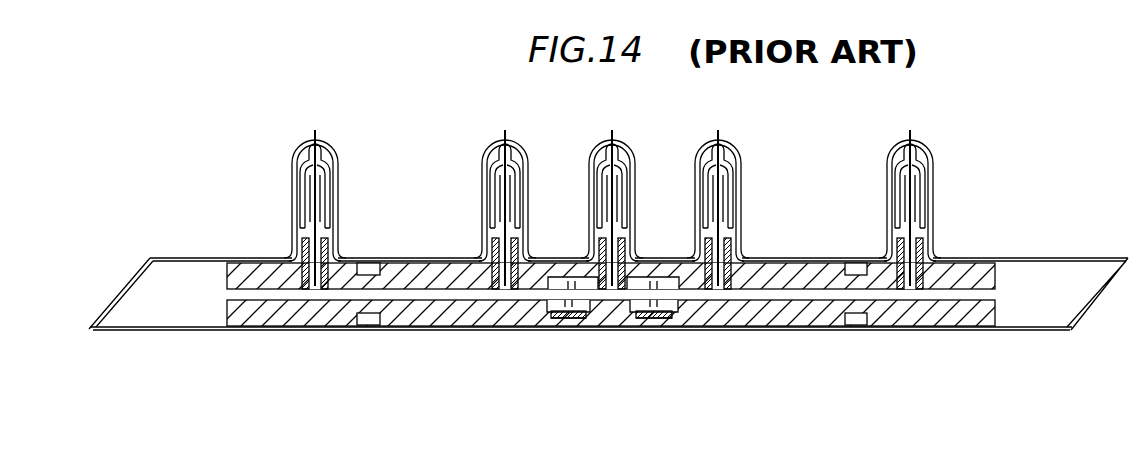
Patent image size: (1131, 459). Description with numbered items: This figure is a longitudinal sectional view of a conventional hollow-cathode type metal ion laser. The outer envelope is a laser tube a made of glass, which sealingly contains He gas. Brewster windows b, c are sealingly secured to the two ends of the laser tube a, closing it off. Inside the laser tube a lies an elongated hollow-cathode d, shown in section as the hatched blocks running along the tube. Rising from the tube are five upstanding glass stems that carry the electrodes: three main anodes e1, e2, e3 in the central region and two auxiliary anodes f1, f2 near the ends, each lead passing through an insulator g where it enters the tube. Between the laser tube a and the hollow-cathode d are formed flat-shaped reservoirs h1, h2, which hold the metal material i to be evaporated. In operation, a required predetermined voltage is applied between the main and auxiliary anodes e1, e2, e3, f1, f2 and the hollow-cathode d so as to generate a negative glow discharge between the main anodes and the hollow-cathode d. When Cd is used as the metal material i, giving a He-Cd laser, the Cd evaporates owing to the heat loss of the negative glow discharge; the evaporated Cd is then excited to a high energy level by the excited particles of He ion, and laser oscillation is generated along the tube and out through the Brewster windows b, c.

The laser tube a is at (197, 258).
The Brewster window b is at (127, 283).
The Brewster window c is at (1093, 310).
The hollow-cathode d is at (418, 262).
The main anode e1 is at (505, 190).
The main anode e2 is at (610, 190).
The main anode e3 is at (718, 194).
The auxiliary anode f1 is at (316, 188).
The auxiliary anode f2 is at (908, 197).
The insulator g is at (324, 242).
The flat-shaped reservoir h1 is at (548, 316).
The flat-shaped reservoir h2 is at (640, 318).
The metal material i is at (565, 325).